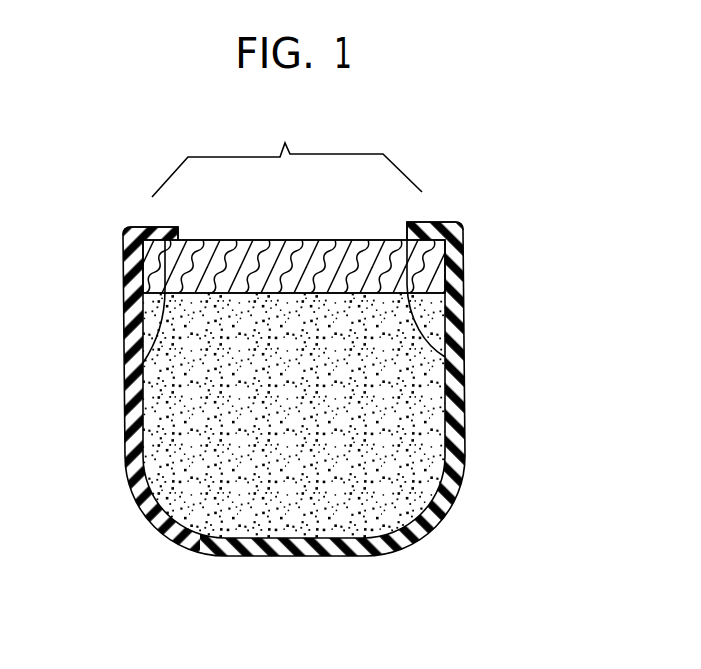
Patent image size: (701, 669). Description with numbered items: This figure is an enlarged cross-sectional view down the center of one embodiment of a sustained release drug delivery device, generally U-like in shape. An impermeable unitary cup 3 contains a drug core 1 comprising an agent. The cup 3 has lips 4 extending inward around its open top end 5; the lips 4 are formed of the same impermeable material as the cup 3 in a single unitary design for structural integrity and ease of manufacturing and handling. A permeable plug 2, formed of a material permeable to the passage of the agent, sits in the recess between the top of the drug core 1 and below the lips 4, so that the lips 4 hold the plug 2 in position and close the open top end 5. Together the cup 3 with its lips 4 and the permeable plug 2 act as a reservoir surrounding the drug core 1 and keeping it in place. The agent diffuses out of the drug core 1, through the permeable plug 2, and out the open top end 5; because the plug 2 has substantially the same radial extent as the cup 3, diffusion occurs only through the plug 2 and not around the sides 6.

The drug core 1 is at (410, 450).
The permeable plug 2 is at (283, 245).
The unitary cup 3 is at (313, 556).
The lips 4 is at (128, 380).
The open top end 5 is at (287, 153).
The sides 6 is at (124, 267).